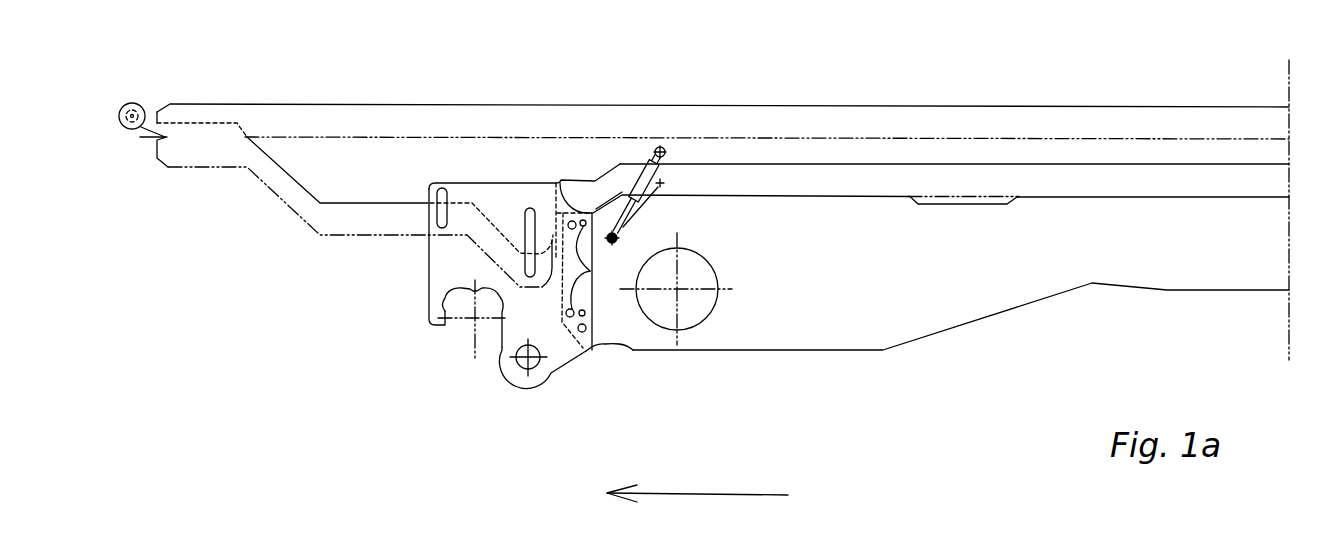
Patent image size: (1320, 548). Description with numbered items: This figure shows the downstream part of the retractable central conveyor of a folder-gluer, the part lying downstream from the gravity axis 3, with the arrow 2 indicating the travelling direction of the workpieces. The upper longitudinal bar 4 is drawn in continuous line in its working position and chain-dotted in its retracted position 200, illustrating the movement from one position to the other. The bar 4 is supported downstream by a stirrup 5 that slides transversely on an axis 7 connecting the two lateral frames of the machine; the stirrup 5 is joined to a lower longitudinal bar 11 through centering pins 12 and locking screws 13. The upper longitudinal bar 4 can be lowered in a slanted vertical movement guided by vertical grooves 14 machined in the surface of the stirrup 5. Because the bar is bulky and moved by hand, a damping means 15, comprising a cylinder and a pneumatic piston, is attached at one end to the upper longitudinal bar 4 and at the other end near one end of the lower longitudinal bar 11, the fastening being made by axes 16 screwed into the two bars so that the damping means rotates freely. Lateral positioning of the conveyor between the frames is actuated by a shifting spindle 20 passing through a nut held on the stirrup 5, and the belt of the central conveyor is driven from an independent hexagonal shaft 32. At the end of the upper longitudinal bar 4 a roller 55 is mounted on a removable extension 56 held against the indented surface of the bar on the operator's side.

The arrow 2 is at (712, 493).
The gravity axis 3 is at (1289, 80).
The upper longitudinal bar 4 is at (312, 128).
The stirrup 5 is at (447, 267).
The axis 7 is at (473, 321).
The lower longitudinal bar 11 is at (982, 272).
The centering pins 12 is at (590, 271).
The locking screws 13 is at (598, 350).
The vertical grooves 14 is at (530, 207).
The damping means 15 is at (664, 172).
The axes 16 is at (612, 236).
The shifting spindle 20 is at (531, 359).
The hexagonal shaft 32 is at (678, 290).
The roller 55 is at (119, 120).
The removable extension 56 is at (142, 136).
The retracted position 200 is at (223, 168).